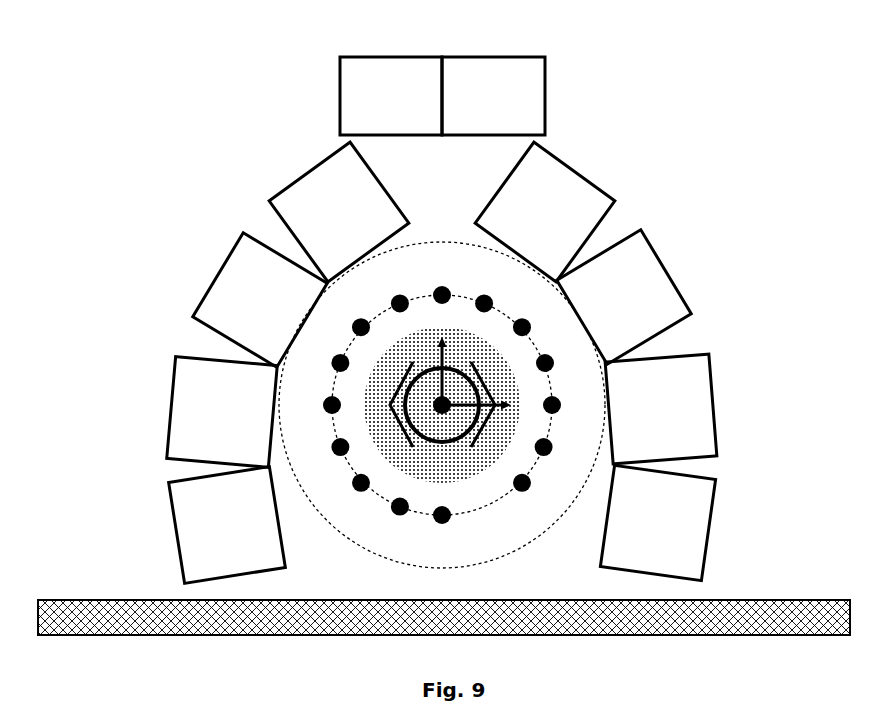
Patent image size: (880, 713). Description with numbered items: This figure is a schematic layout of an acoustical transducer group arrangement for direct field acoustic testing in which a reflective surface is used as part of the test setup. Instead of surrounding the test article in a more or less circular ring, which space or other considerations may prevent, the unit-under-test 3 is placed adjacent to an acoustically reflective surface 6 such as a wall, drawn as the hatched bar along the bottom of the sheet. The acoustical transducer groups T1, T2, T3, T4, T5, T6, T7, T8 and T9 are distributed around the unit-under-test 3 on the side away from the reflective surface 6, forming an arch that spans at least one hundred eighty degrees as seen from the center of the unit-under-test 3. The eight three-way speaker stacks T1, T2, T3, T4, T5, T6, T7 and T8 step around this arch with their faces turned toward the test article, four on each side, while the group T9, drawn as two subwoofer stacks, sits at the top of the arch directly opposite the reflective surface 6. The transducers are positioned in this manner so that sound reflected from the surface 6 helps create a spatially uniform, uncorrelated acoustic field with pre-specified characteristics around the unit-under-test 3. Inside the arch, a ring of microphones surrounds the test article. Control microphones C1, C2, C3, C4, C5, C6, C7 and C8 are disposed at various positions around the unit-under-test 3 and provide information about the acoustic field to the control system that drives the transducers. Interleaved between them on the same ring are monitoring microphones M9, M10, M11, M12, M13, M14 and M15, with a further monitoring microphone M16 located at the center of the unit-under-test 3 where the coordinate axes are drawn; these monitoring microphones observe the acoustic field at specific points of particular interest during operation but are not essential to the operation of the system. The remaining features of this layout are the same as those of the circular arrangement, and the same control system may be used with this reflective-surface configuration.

The acoustical transducer group T1 is at (590, 158).
The acoustical transducer group T2 is at (679, 259).
The acoustical transducer group T3 is at (727, 405).
The acoustical transducer group T4 is at (722, 527).
The acoustical transducer group T5 is at (160, 520).
The acoustical transducer group T6 is at (160, 409).
The acoustical transducer group T7 is at (207, 266).
The acoustical transducer group T8 is at (300, 163).
The acoustical transducer group T9 is at (441, 45).
The acoustically reflective surface 6 is at (105, 588).
The unit-under-test 3 is at (490, 472).
The monitoring microphone M16 is at (445, 415).
The control microphone C1 is at (444, 527).
The control microphone C2 is at (355, 494).
The control microphone C3 is at (334, 417).
The control microphone C4 is at (351, 317).
The control microphone C5 is at (453, 290).
The control microphone C6 is at (535, 323).
The control microphone C7 is at (562, 413).
The control microphone C8 is at (539, 490).
The monitoring microphone M9 is at (400, 520).
The monitoring microphone M10 is at (332, 458).
The monitoring microphone M11 is at (323, 370).
The monitoring microphone M12 is at (391, 294).
The monitoring microphone M13 is at (498, 294).
The monitoring microphone M14 is at (567, 370).
The monitoring microphone M15 is at (563, 449).